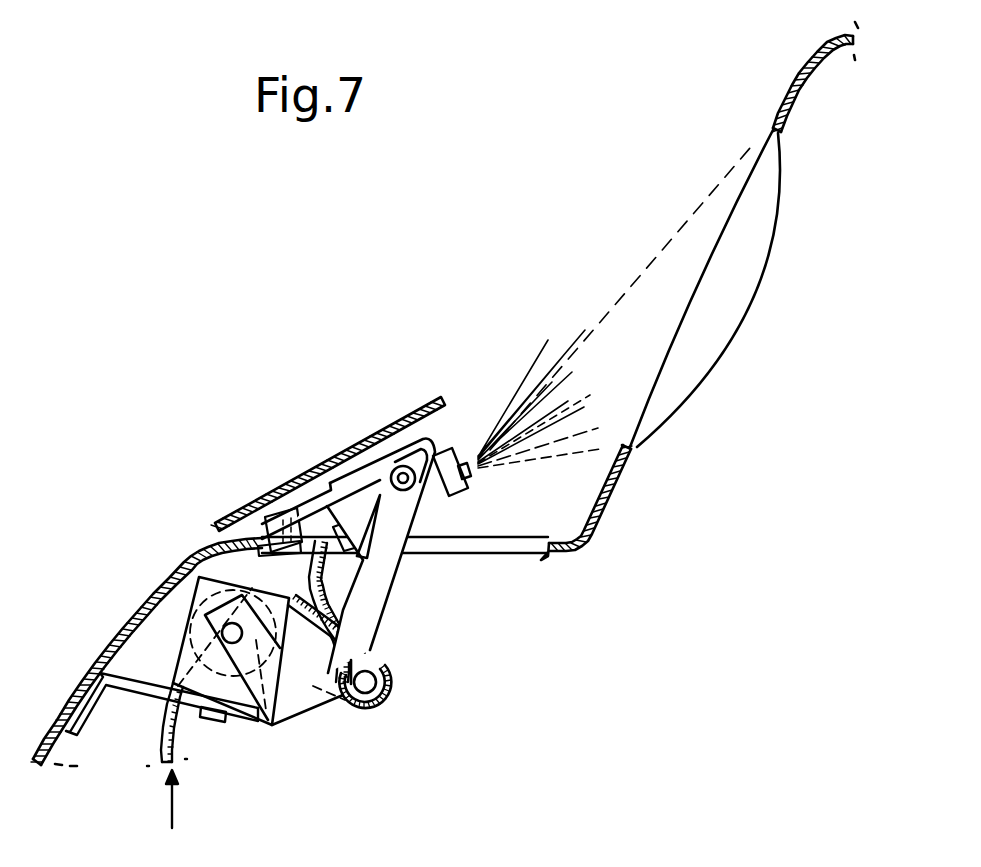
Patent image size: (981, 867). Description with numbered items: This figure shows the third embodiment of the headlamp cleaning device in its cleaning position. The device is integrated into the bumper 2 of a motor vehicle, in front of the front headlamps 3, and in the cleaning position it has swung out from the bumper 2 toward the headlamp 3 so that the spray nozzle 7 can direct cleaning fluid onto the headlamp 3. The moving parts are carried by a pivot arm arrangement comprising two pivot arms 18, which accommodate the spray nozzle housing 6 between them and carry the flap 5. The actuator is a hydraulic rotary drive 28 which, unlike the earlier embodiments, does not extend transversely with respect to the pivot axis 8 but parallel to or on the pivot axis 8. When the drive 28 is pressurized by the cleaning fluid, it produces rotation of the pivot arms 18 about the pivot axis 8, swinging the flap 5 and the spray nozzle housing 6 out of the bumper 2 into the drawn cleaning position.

The bumper 2 is at (188, 556).
The front headlamps 3 is at (697, 286).
The flap 5 is at (347, 457).
The spray nozzle housing 6 is at (440, 495).
The nozzle 7 is at (463, 460).
The pivot axis 8 is at (228, 630).
The pivot arms 18 is at (380, 588).
The hydraulic rotary drive 28 is at (170, 644).